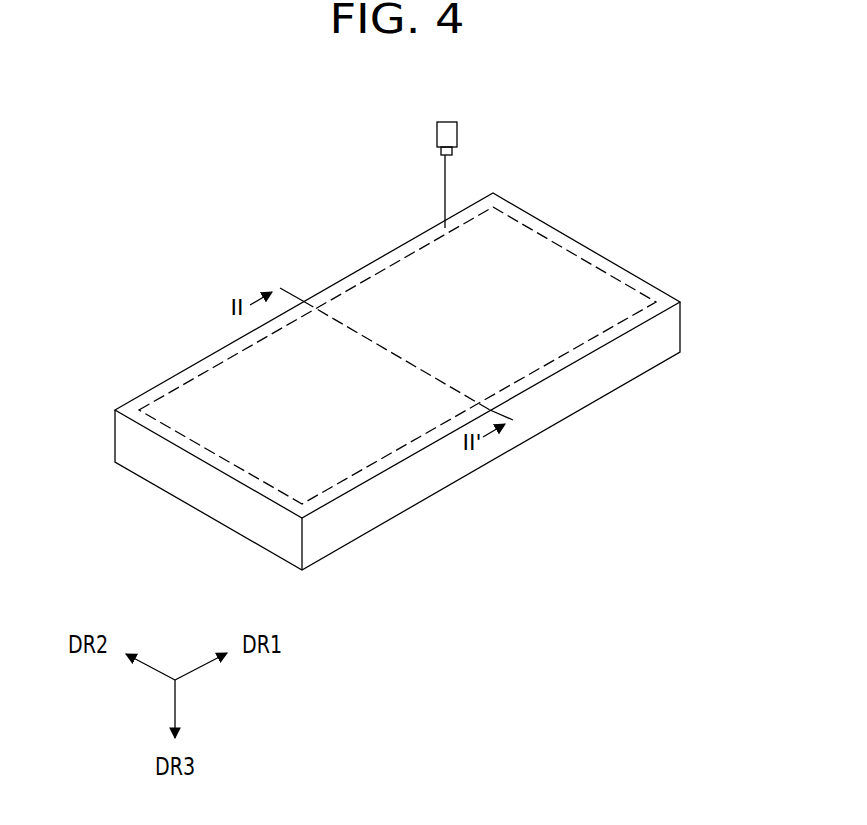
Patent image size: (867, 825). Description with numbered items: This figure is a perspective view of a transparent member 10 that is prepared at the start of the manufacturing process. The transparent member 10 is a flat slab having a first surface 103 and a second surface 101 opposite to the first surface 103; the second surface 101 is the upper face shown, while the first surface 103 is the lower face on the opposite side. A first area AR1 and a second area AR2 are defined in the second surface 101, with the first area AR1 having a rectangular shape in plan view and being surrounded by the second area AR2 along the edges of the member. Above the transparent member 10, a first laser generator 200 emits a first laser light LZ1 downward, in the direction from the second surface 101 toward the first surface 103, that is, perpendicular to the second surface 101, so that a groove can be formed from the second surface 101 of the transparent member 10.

The transparent member 10 is at (434, 368).
The second surface 101 is at (409, 342).
The first surface 103 is at (635, 380).
The first area AR1 is at (592, 277).
The second area AR2 is at (647, 290).
The first laser generator 200 is at (457, 133).
The first laser light LZ1 is at (445, 168).